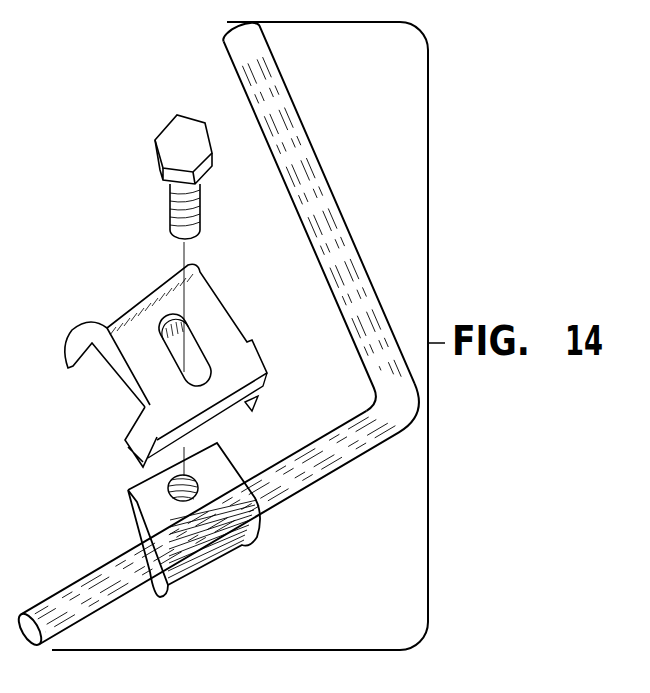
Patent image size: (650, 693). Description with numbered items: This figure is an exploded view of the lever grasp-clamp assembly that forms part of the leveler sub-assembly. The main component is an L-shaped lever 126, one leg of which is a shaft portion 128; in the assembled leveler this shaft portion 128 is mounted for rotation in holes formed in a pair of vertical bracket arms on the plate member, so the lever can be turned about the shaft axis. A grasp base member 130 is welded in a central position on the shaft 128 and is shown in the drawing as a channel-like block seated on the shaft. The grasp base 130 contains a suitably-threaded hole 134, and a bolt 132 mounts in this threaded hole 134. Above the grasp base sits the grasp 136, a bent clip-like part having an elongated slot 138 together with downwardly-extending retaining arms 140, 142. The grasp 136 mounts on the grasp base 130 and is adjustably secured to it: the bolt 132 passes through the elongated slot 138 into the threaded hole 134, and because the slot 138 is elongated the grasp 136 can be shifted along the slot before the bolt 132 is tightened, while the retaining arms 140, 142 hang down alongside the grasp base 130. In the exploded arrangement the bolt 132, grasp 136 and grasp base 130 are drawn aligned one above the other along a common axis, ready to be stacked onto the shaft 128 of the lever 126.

The L-shaped lever 126 is at (300, 137).
The shaft portion 128 is at (320, 462).
The grasp base member 130 is at (235, 540).
The bolt 132 is at (175, 147).
The threaded hole 134 is at (167, 493).
The grasp 136 is at (110, 323).
The elongated slot 138 is at (195, 353).
The retaining arm 140 is at (133, 460).
The retaining arm 142 is at (253, 403).